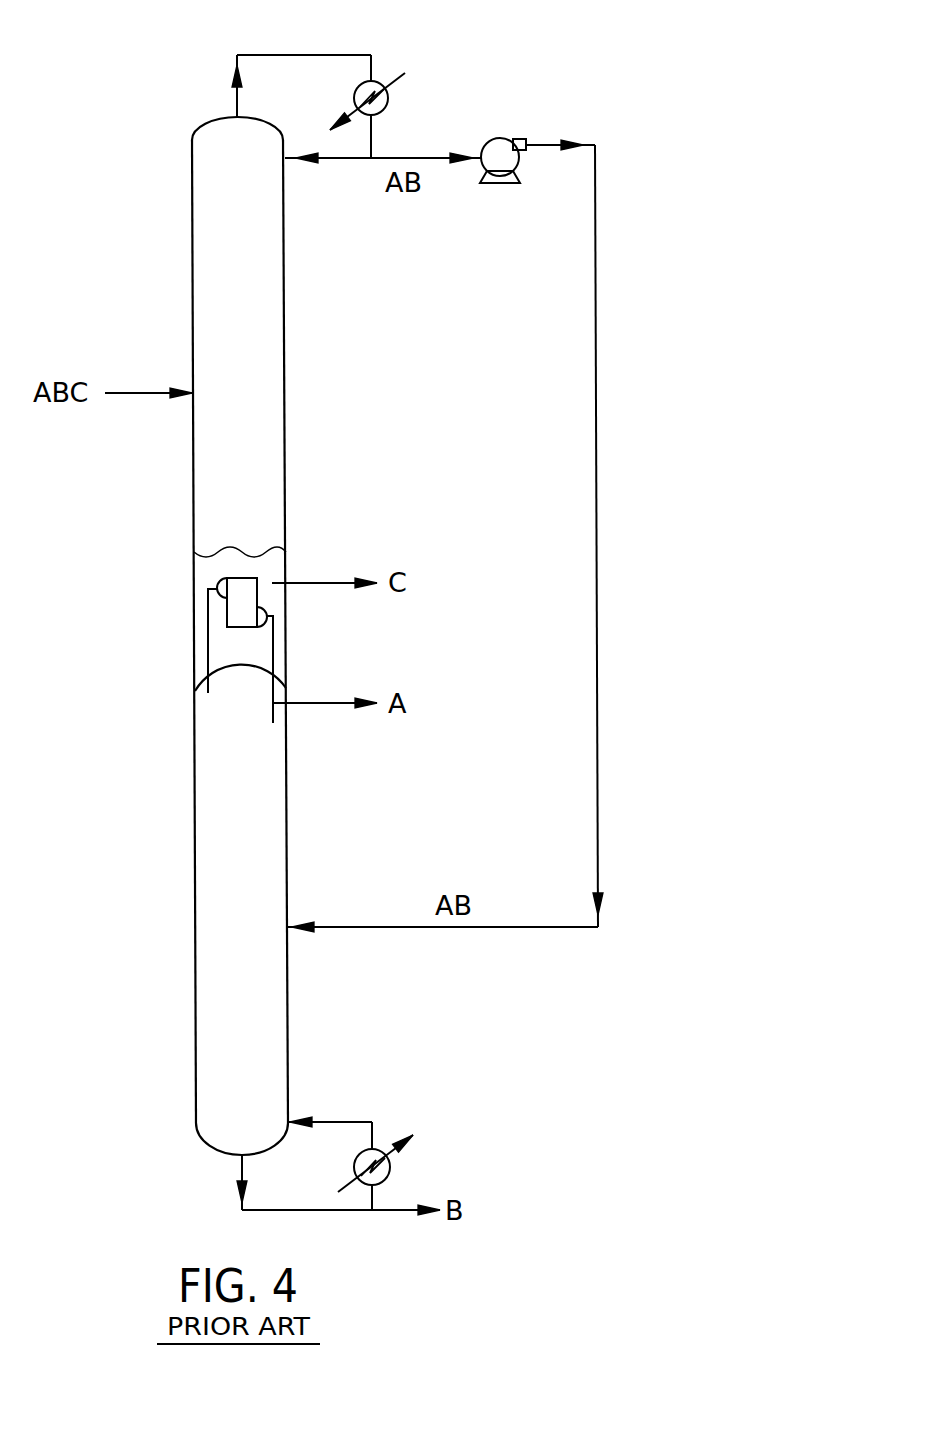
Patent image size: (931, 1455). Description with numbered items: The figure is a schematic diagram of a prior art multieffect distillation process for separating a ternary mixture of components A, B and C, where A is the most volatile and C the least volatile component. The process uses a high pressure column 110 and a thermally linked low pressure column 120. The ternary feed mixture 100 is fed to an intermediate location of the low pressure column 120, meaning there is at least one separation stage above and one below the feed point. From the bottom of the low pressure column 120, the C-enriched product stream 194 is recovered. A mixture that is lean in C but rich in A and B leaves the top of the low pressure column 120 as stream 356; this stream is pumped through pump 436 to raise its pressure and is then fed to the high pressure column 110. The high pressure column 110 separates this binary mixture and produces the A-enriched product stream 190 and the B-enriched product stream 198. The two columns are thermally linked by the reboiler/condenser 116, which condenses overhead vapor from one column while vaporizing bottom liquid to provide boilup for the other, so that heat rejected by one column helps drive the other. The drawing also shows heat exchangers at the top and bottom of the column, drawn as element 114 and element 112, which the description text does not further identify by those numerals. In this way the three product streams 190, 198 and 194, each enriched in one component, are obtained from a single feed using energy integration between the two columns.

The ternary feed mixture 100 is at (142, 395).
The high pressure column 110 is at (289, 1035).
The reboiler 112 is at (383, 1146).
The condenser 114 is at (390, 72).
The reboiler/condenser 116 is at (237, 578).
The low pressure column 120 is at (193, 225).
The A-enriched product stream 190 is at (317, 703).
The C-enriched product stream 194 is at (325, 583).
The B-enriched product stream 198 is at (385, 1210).
The stream lean in C but rich in A and B 356 is at (420, 158).
The pump 436 is at (500, 152).